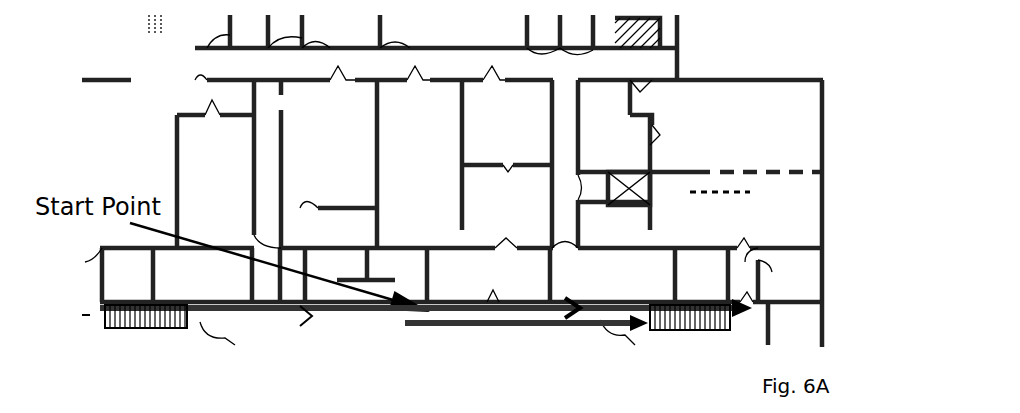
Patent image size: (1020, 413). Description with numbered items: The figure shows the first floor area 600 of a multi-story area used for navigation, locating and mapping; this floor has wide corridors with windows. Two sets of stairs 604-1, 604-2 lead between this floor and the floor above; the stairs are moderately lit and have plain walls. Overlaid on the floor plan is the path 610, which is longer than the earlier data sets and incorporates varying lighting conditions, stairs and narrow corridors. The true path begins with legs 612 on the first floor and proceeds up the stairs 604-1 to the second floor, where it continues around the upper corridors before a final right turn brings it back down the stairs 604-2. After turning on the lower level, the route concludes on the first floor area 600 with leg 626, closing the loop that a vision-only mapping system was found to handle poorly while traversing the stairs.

The first floor area 600 is at (706, 61).
The stairs 604-1 is at (686, 335).
The stairs 604-2 is at (142, 334).
The path 610 is at (504, 338).
The legs 612 is at (554, 334).
The leg 626 is at (312, 319).